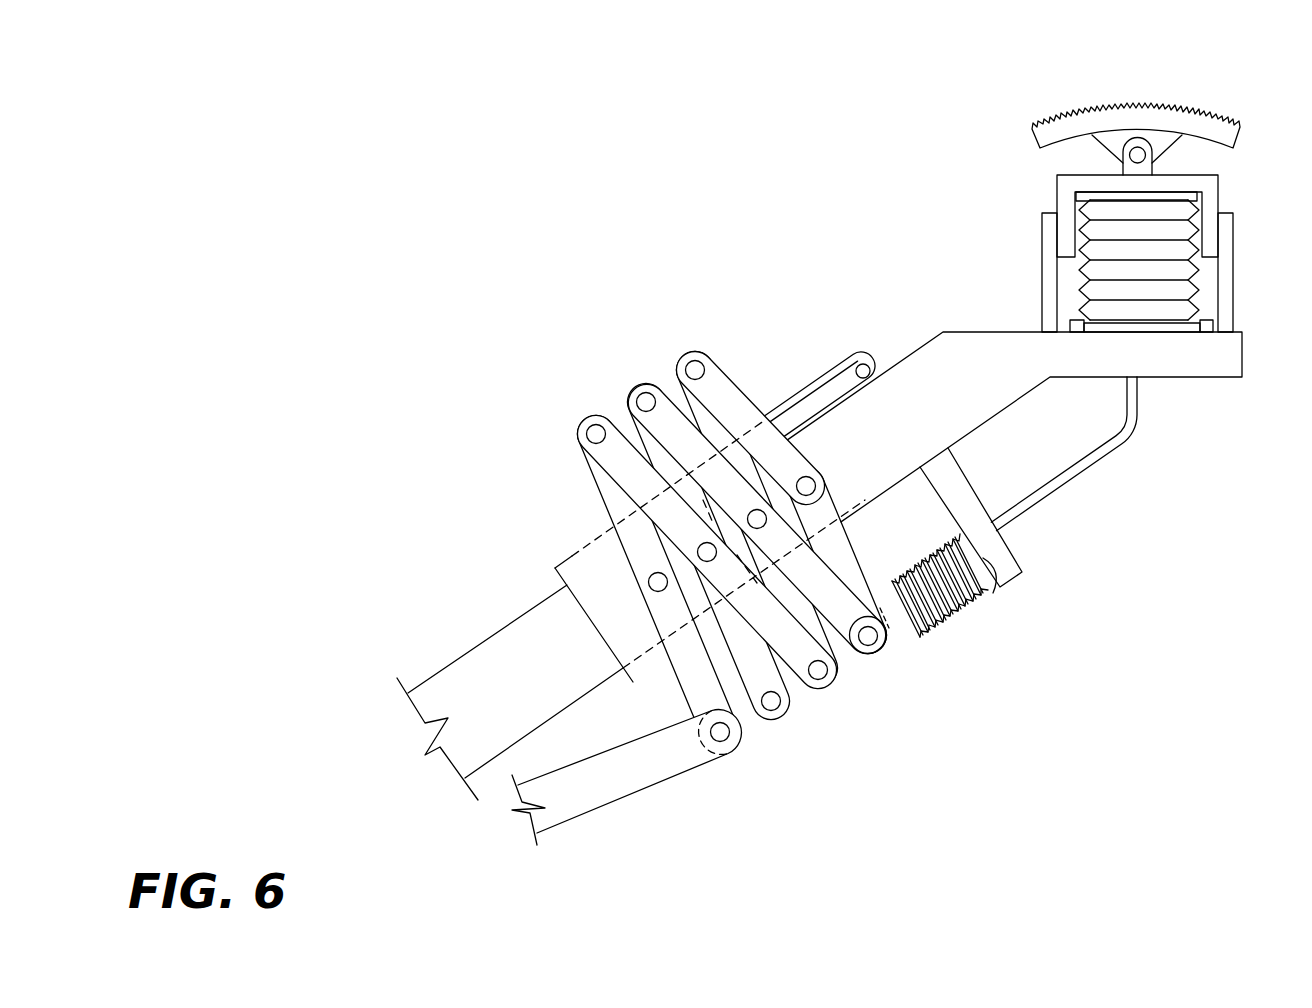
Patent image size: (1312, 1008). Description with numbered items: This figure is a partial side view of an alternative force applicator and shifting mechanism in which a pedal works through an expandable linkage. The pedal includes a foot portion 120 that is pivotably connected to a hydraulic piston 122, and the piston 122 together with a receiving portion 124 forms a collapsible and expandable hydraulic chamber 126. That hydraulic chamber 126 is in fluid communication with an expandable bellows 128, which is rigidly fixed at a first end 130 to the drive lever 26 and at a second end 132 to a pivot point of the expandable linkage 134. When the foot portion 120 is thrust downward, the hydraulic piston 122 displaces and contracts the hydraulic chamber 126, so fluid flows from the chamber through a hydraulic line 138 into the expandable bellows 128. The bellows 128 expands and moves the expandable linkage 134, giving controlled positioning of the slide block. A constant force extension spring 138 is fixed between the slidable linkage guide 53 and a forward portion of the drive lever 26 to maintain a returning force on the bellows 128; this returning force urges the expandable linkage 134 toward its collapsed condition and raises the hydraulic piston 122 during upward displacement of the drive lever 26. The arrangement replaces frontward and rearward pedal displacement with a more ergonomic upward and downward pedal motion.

The drive lever 26 is at (913, 384).
The slidable linkage guide 53 is at (568, 565).
The foot portion 120 is at (1073, 128).
The hydraulic piston 122 is at (1065, 203).
The receiving portion 124 is at (1047, 293).
The hydraulic chamber 126 is at (1173, 260).
The expandable bellows 128 is at (983, 603).
The first end 130 is at (983, 558).
The second end 132 is at (903, 633).
The expandable linkage 134 is at (877, 758).
The hydraulic line 138 is at (818, 377).